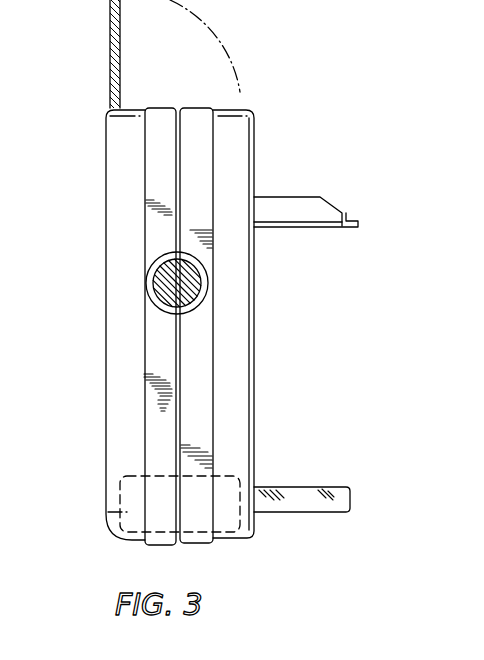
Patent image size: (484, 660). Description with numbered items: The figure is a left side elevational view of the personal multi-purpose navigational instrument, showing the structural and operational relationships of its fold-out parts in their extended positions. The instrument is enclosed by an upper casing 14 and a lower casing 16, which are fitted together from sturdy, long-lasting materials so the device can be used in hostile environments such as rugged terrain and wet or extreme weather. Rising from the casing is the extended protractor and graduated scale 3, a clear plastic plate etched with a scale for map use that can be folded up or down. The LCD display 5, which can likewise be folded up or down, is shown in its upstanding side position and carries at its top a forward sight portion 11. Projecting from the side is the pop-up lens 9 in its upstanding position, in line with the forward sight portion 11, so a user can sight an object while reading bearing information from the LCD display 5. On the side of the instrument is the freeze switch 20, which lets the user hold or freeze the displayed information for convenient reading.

The protractor and graduated scale 3 is at (110, 60).
The lower casing 16 is at (113, 148).
The upper casing 14 is at (236, 141).
The LCD display 5 is at (302, 197).
The forward sight portion 11 is at (358, 222).
The freeze switch 20 is at (198, 285).
The pop-up lens 9 is at (293, 490).